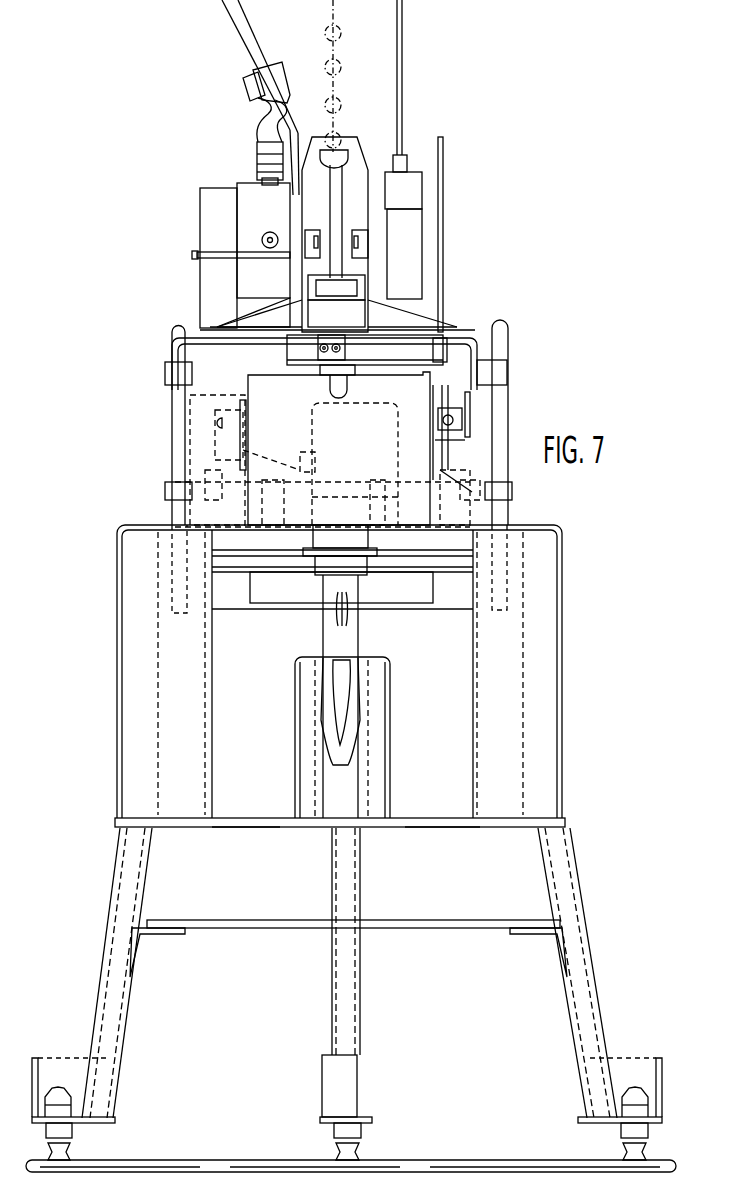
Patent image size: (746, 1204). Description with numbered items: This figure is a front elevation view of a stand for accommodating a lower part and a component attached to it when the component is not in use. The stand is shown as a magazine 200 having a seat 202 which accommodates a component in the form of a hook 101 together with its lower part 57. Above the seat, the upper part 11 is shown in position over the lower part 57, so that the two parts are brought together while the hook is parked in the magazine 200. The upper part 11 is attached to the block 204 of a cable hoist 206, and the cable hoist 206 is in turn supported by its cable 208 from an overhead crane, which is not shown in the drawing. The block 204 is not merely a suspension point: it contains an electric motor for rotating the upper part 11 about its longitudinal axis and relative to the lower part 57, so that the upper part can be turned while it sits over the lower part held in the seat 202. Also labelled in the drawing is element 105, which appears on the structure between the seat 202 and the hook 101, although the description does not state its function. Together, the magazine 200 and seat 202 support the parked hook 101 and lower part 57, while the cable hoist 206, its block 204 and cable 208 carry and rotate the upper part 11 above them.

The cable 208 is at (338, 70).
The cable hoist 206 is at (362, 150).
The block 204 is at (336, 228).
The upper part 11 is at (428, 374).
The lower part 57 is at (348, 497).
The collar 105 is at (318, 564).
The seat 202 is at (452, 568).
The hook 101 is at (342, 742).
The magazine 200 is at (585, 891).